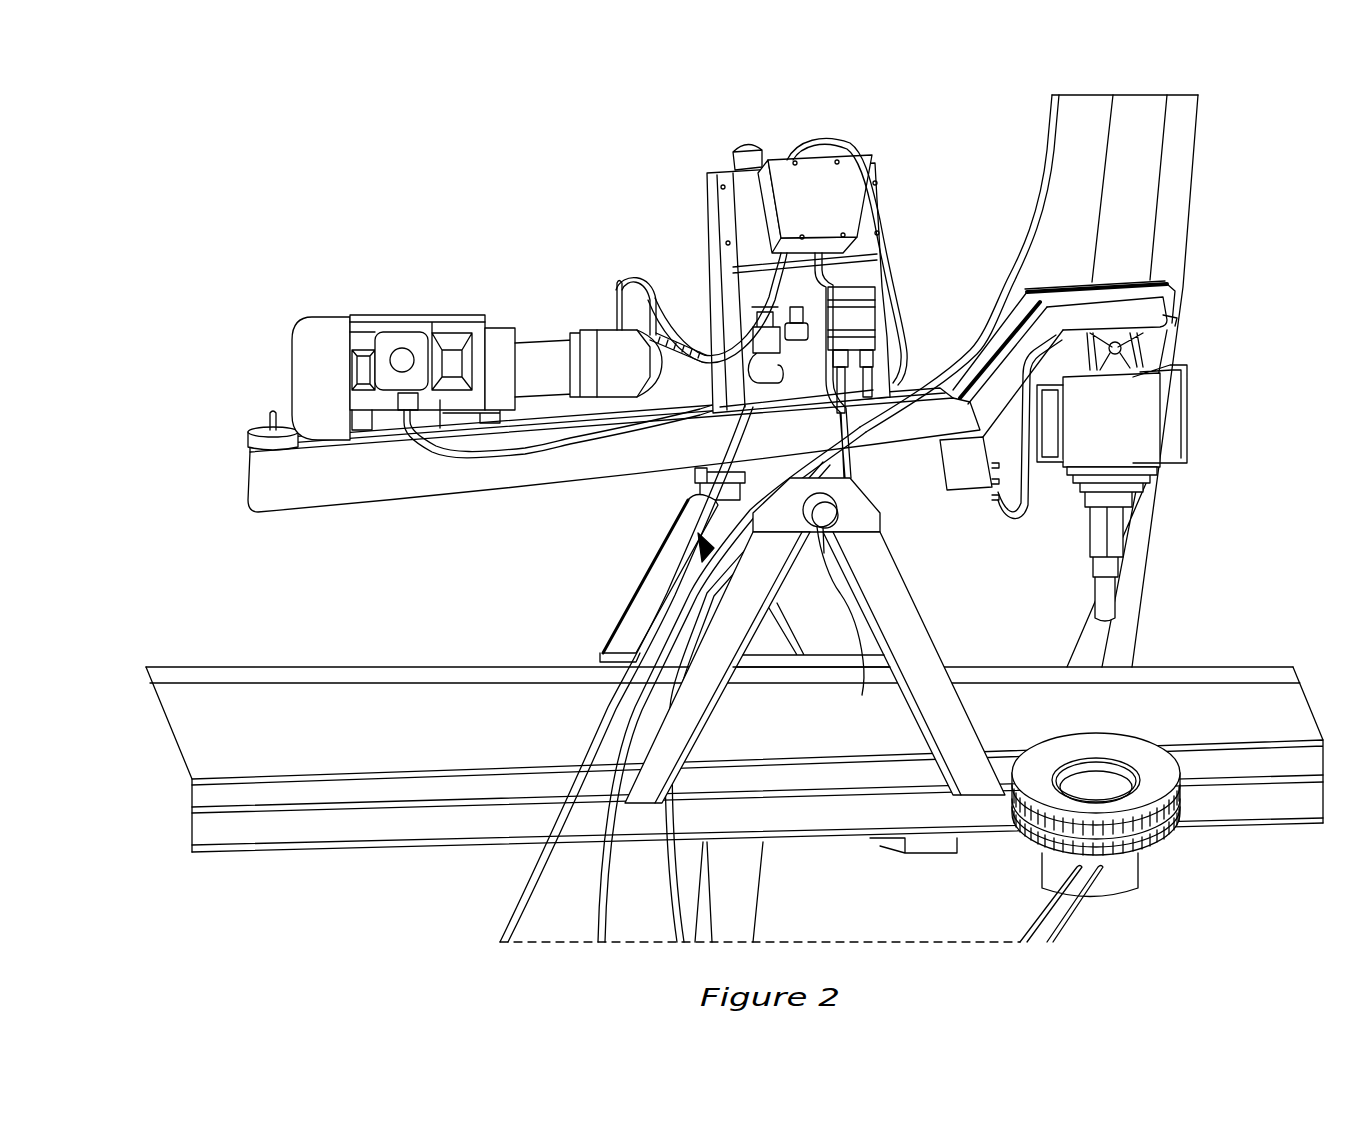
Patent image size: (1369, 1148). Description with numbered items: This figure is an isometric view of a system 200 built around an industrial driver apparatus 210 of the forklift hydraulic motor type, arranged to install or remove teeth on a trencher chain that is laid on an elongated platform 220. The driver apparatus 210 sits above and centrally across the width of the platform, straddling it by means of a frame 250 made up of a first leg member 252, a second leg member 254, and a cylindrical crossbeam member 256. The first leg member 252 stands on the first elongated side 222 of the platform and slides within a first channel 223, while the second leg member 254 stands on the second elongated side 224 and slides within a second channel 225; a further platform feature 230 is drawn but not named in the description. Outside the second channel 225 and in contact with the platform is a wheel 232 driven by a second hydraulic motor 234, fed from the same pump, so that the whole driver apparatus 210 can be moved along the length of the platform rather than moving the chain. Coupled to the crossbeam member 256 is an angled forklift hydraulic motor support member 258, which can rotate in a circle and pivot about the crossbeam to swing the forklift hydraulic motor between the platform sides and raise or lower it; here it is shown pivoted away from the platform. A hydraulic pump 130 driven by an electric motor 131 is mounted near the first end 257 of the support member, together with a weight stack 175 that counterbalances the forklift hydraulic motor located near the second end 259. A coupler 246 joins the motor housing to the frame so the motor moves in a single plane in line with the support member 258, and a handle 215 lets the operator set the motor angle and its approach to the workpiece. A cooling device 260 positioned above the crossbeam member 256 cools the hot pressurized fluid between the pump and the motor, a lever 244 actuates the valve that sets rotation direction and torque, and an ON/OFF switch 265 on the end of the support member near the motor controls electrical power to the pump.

The system 200 is at (314, 232).
The hydraulic pump 130 is at (597, 325).
The electric motor 131 is at (373, 320).
The weight stack 175 is at (255, 430).
The industrial driver apparatus 210 is at (1170, 480).
The handle 215 is at (1185, 410).
The elongated platform 220 is at (375, 718).
The first elongated side 222 is at (528, 660).
The first channel 223 is at (265, 718).
The second elongated side 224 is at (687, 790).
The second channel 225 is at (403, 823).
The rail track 230 is at (455, 680).
The wheel 232 is at (1080, 775).
The second hydraulic motor 234 is at (1127, 893).
The lever 244 is at (1003, 512).
The coupler 246 is at (1133, 343).
The frame 250 is at (918, 580).
The first leg member 252 is at (690, 528).
The second leg member 254 is at (657, 727).
The crossbeam member 256 is at (862, 690).
The first end 257 is at (290, 513).
The forklift hydraulic motor support member 258 is at (1073, 310).
The second end 259 is at (1170, 286).
The cooling device 260 is at (753, 290).
The ON/OFF switch 265 is at (1178, 319).